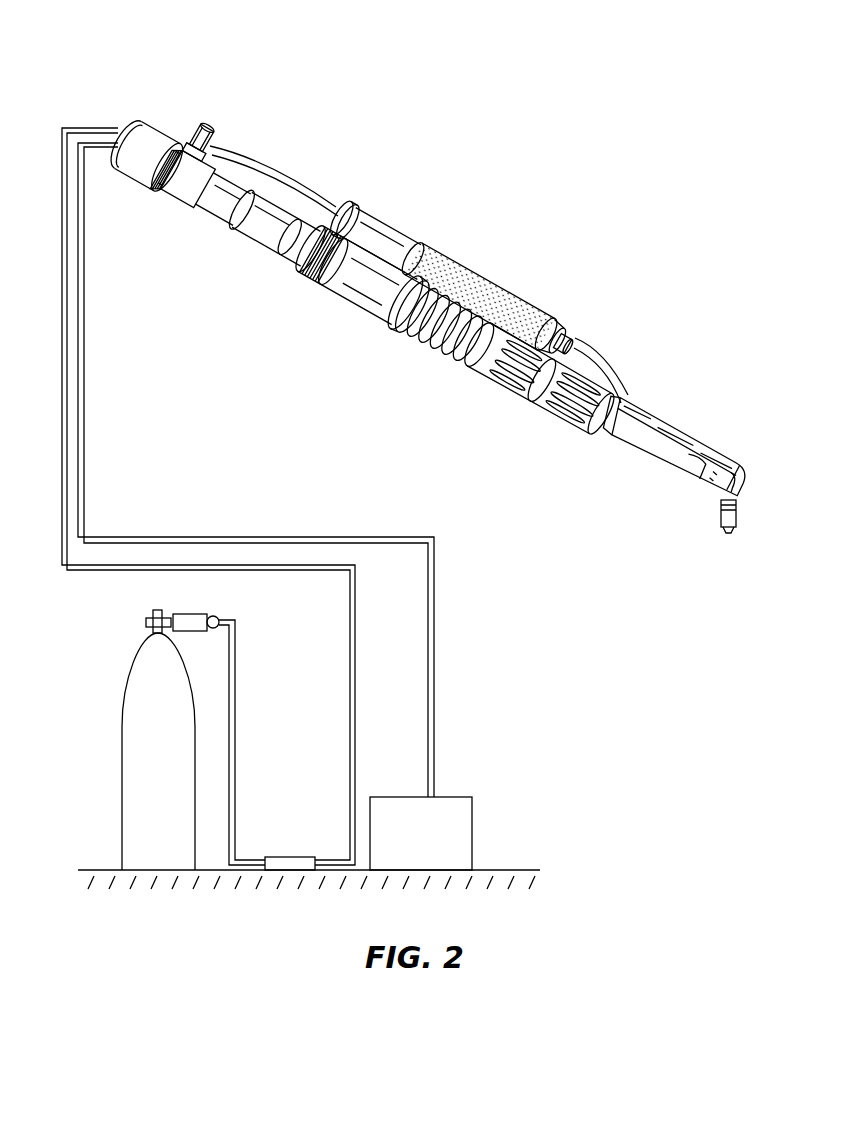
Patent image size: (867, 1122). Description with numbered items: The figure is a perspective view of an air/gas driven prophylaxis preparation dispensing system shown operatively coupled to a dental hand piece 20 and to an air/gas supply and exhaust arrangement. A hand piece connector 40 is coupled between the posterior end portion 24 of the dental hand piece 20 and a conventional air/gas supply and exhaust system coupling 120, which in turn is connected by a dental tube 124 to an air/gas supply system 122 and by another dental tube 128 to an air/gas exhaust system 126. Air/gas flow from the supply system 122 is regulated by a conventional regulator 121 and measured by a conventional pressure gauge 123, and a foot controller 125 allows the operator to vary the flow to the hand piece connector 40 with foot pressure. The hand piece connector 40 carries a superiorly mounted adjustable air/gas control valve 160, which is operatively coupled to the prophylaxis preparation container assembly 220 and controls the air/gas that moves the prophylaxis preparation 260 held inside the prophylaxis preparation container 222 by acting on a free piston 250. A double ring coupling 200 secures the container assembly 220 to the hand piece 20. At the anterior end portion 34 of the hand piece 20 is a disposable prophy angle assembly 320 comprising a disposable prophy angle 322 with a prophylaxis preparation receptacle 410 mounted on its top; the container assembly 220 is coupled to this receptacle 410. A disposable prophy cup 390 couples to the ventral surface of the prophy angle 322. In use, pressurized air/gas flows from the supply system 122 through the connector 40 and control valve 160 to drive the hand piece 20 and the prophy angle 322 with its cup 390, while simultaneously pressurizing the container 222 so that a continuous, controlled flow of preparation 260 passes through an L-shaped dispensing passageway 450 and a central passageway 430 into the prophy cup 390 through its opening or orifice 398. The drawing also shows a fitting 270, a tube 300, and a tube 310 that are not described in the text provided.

The dental hand piece 20 is at (352, 317).
The posterior end portion 24 is at (268, 266).
The anterior end portion 34 is at (535, 431).
The hand piece connector 40 is at (204, 219).
The air/gas supply and exhaust system coupling 120 is at (141, 188).
The regulator 121 is at (185, 617).
The air/gas supply system 122 is at (107, 671).
The pressure gauge 123 is at (222, 618).
The dental tube 124 is at (67, 395).
The foot controller 125 is at (291, 857).
The air/gas exhaust system 126 is at (432, 842).
The dental tube 128 is at (84, 347).
The adjustable air/gas control valve 160 is at (233, 117).
The double ring coupling 200 is at (403, 355).
The prophylaxis preparation container assembly 220 is at (489, 247).
The prophylaxis preparation container 222 is at (390, 214).
The free piston 250 is at (418, 238).
The prophylaxis preparation 260 is at (518, 300).
The fitting 270 is at (357, 199).
The supply tube 300 is at (292, 184).
The delivery tube 310 is at (597, 355).
The disposable prophy angle assembly 320 is at (692, 418).
The disposable prophy angle 322 is at (668, 474).
The disposable prophy cup 390 is at (720, 532).
The opening or orifice 398 is at (735, 534).
The prophylaxis preparation receptacle 410 is at (653, 395).
The central passageway 430 is at (740, 460).
The L-shaped dispensing passageway 450 is at (712, 467).